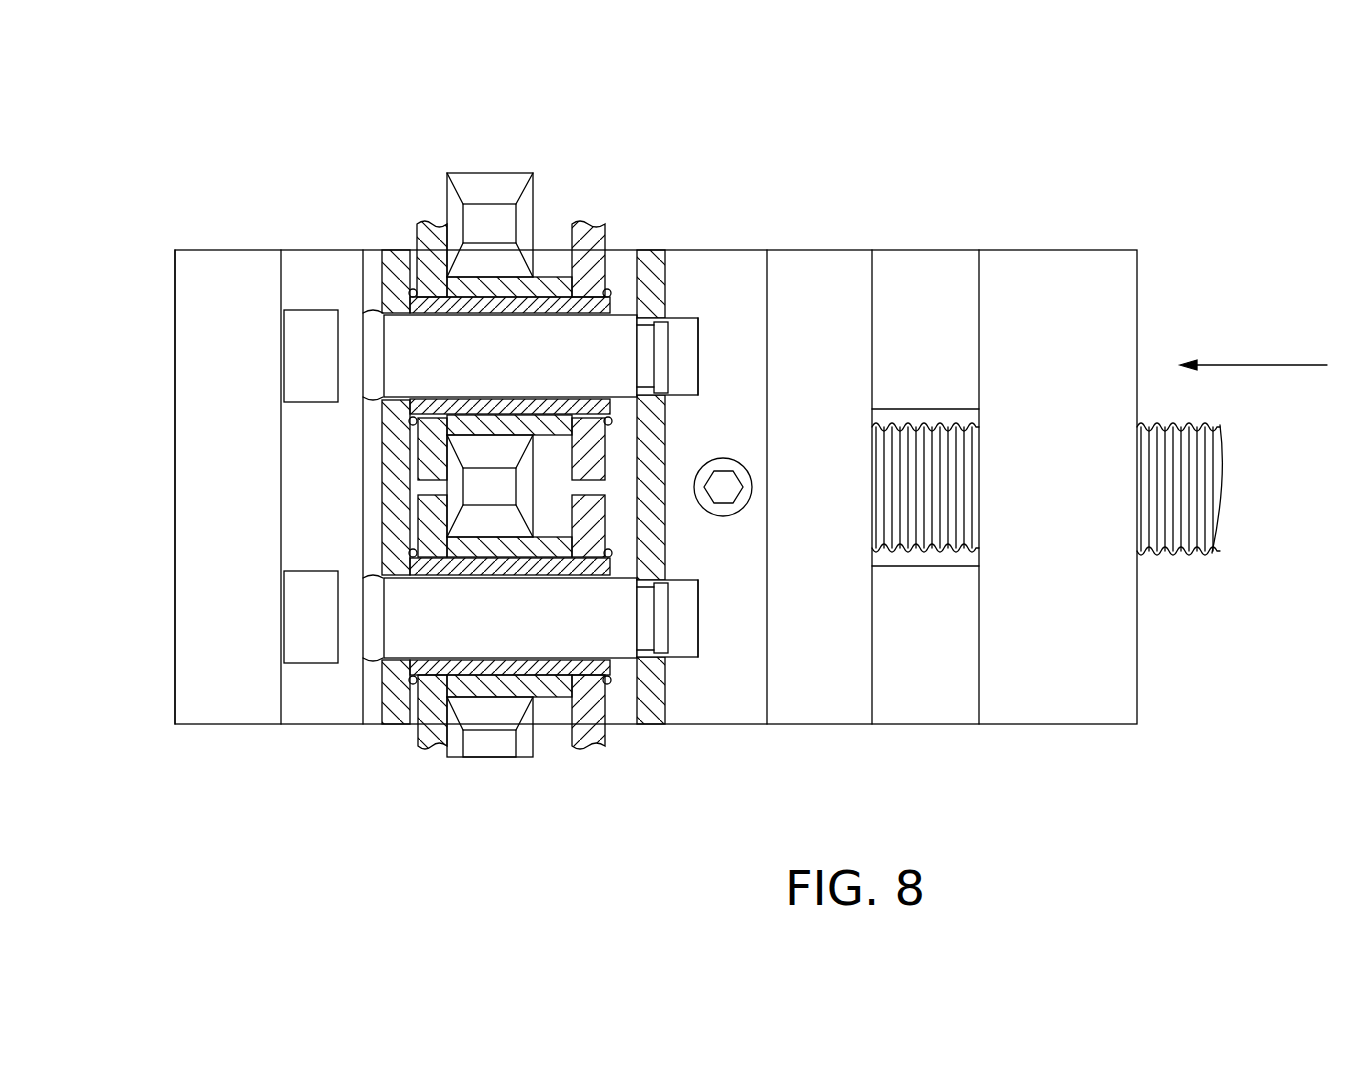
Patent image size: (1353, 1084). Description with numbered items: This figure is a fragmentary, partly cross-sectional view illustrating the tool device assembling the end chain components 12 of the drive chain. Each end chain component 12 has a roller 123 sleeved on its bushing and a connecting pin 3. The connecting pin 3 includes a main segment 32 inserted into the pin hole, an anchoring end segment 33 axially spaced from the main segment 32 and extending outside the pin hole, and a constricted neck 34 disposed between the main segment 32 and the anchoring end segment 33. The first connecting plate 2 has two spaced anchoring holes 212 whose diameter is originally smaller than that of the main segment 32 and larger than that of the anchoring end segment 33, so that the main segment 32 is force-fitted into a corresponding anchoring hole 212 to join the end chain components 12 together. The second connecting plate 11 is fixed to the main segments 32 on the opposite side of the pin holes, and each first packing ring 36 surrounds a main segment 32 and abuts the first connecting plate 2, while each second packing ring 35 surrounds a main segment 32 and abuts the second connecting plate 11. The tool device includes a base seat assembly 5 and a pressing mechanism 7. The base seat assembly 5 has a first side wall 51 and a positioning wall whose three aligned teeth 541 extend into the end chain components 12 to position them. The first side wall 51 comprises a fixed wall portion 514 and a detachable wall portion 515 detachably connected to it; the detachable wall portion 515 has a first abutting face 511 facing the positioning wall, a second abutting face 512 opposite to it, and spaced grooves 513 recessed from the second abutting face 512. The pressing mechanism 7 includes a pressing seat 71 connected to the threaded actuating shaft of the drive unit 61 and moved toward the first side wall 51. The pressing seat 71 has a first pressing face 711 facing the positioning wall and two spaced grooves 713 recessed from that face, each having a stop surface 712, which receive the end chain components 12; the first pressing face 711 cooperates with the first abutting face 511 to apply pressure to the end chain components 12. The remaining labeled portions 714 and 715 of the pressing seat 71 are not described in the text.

The first connecting plate 2 is at (685, 489).
The anchoring hole 212 is at (650, 305).
The connecting pin 3 is at (327, 511).
The main segment 32 is at (560, 638).
The anchoring end segment 33 is at (660, 355).
The constricted neck 34 is at (645, 632).
The second packing ring 35 is at (407, 333).
The first packing ring 36 is at (614, 289).
The base seat assembly 5 is at (223, 480).
The first side wall 51 is at (223, 424).
The first abutting face 511 is at (362, 487).
The second abutting face 512 is at (282, 440).
The spaced grooves 513 is at (293, 364).
The fixed wall portion 514 is at (216, 268).
The detachable wall portion 515 is at (300, 268).
The teeth 541 is at (488, 225).
The second connecting plate 11 is at (395, 718).
The end chain component 12 is at (619, 755).
The roller 123 is at (472, 690).
The pressing mechanism 7 is at (836, 477).
The pressing seat 71 is at (862, 425).
The first pressing face 711 is at (668, 705).
The stop surface 712 is at (700, 613).
The spaced grooves 713 is at (712, 544).
The threaded portion 714 is at (825, 295).
The outer portion 715 is at (745, 295).
The drive unit 61 is at (1145, 558).